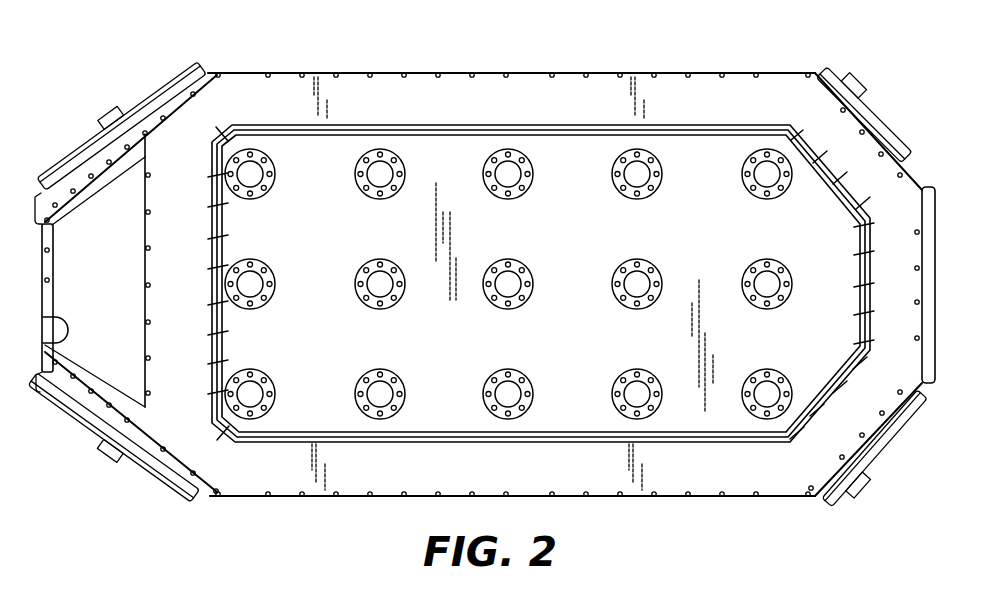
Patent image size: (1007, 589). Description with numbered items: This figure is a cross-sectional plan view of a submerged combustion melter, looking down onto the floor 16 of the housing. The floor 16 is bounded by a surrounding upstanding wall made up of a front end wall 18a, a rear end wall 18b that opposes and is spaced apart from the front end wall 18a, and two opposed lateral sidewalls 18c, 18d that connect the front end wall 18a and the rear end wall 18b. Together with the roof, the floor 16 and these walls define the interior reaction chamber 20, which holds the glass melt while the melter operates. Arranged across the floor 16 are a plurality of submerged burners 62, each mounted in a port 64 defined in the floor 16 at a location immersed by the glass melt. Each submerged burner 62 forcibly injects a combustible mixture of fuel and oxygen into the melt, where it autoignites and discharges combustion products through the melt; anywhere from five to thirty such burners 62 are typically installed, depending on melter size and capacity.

The floor 16 is at (583, 240).
The front end wall 18a is at (180, 280).
The rear end wall 18b is at (903, 267).
The lateral sidewall 18c is at (522, 92).
The lateral sidewall 18d is at (602, 475).
The interior reaction chamber 20 is at (686, 134).
The submerged burner 62 is at (252, 172).
The port 64 is at (259, 195).